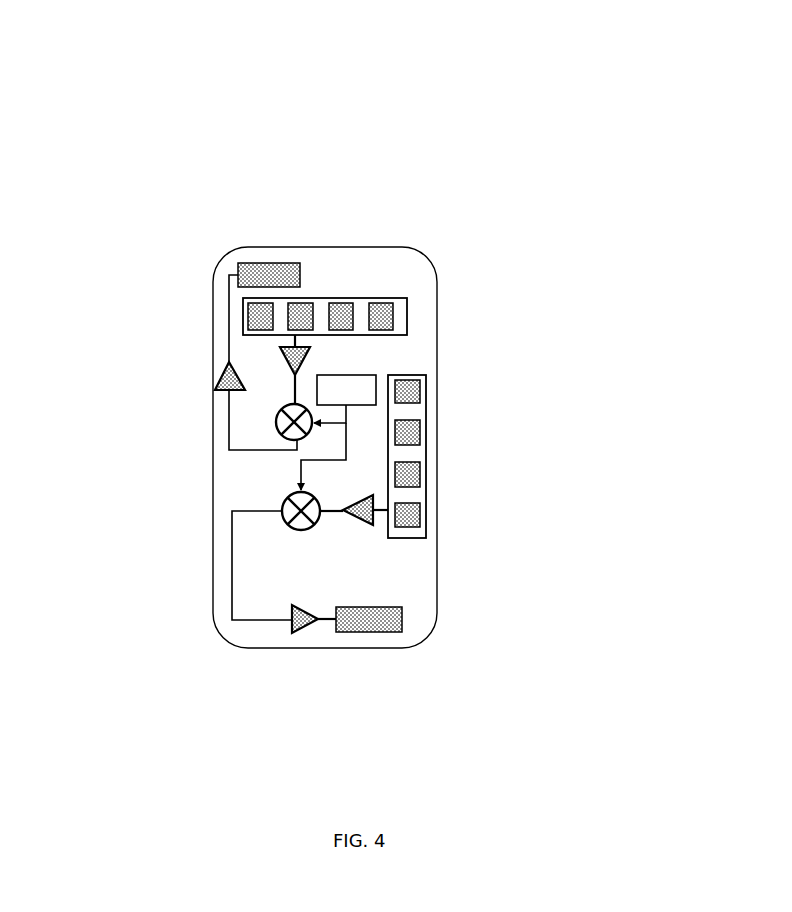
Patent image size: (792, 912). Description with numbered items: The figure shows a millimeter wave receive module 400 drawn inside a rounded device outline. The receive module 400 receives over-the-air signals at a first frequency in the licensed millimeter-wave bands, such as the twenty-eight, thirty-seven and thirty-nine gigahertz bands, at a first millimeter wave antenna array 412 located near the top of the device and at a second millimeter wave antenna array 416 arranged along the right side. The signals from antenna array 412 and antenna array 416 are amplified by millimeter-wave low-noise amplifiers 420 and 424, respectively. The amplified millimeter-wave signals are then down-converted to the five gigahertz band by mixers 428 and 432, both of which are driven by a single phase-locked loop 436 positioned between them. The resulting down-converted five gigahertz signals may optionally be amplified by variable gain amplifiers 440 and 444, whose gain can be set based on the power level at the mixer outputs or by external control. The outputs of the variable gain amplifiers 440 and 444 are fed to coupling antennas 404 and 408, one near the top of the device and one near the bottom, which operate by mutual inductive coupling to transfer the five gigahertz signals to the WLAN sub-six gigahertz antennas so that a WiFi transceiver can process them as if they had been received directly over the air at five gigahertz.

The millimeter wave receive module 400 is at (333, 98).
The coupling antenna 404 is at (268, 265).
The coupling antenna 408 is at (373, 628).
The millimeter wave antenna array 412 is at (407, 312).
The millimeter wave antenna array 416 is at (426, 450).
The low-noise amplifier 420 is at (280, 352).
The low-noise amplifier 424 is at (343, 510).
The mixer 428 is at (275, 420).
The mixer 432 is at (285, 522).
The phase-locked loop 436 is at (363, 375).
The variable gain amplifier 440 is at (215, 378).
The variable gain amplifier 444 is at (312, 628).